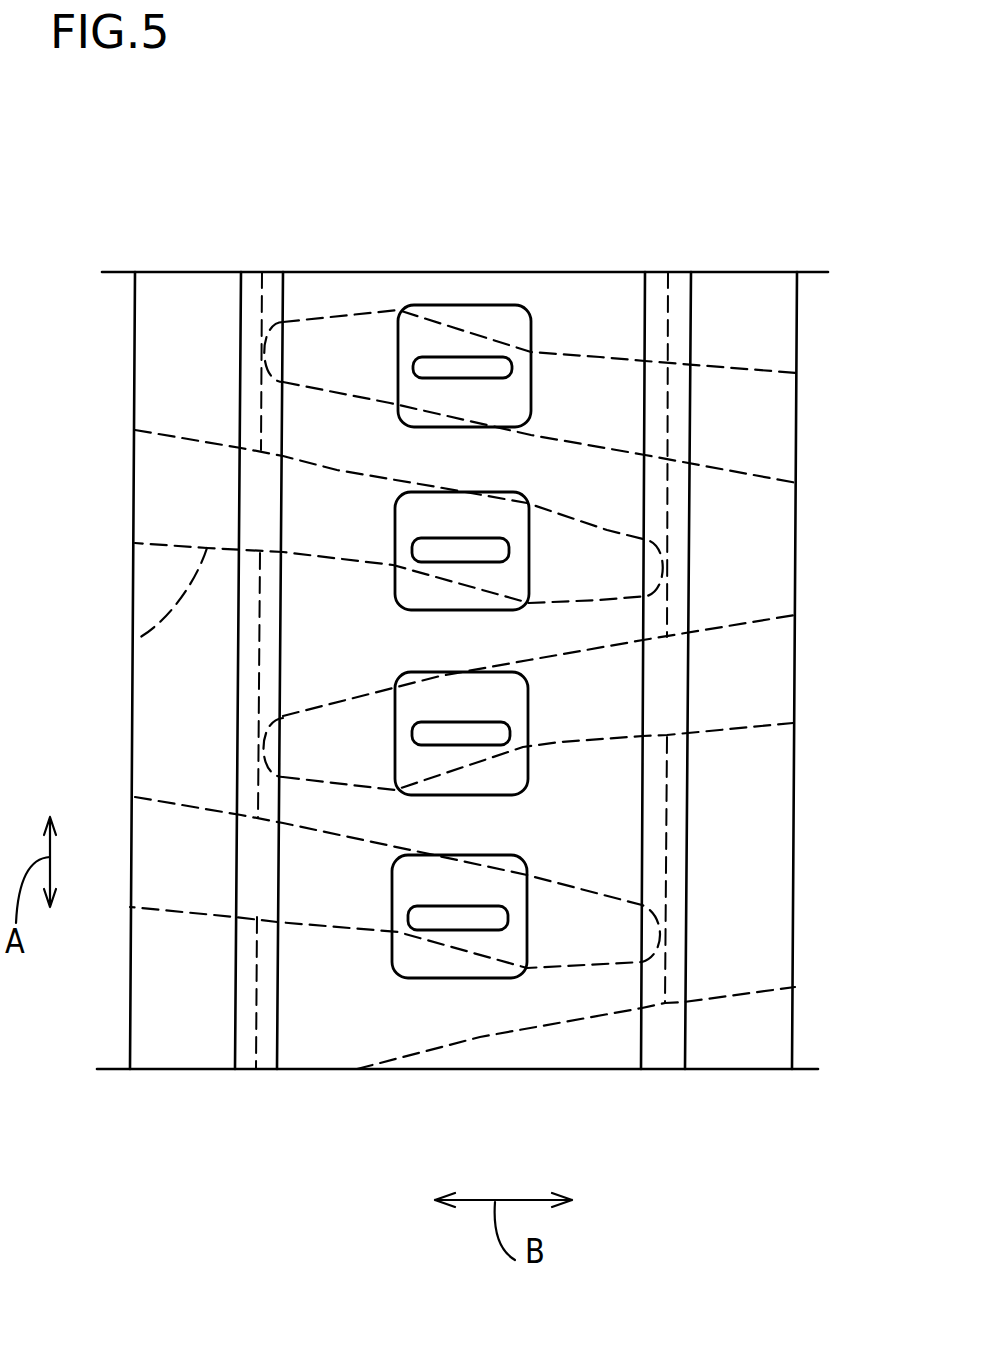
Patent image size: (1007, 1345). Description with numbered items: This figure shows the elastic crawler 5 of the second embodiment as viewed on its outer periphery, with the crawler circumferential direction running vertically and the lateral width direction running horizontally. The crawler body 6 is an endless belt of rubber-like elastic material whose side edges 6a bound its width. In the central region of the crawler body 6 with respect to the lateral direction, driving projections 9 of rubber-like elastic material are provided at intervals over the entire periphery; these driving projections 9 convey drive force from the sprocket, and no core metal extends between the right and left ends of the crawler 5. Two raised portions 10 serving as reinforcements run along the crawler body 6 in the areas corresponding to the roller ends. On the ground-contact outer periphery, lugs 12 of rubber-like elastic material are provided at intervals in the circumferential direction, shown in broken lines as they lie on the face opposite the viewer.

The elastic crawler 5 is at (775, 256).
The crawler body 6 is at (414, 1072).
The side edges of base cloth 6a is at (210, 1077).
The driving projections 9 is at (528, 312).
The raised portions 10 is at (241, 375).
The lugs 12 is at (622, 360).